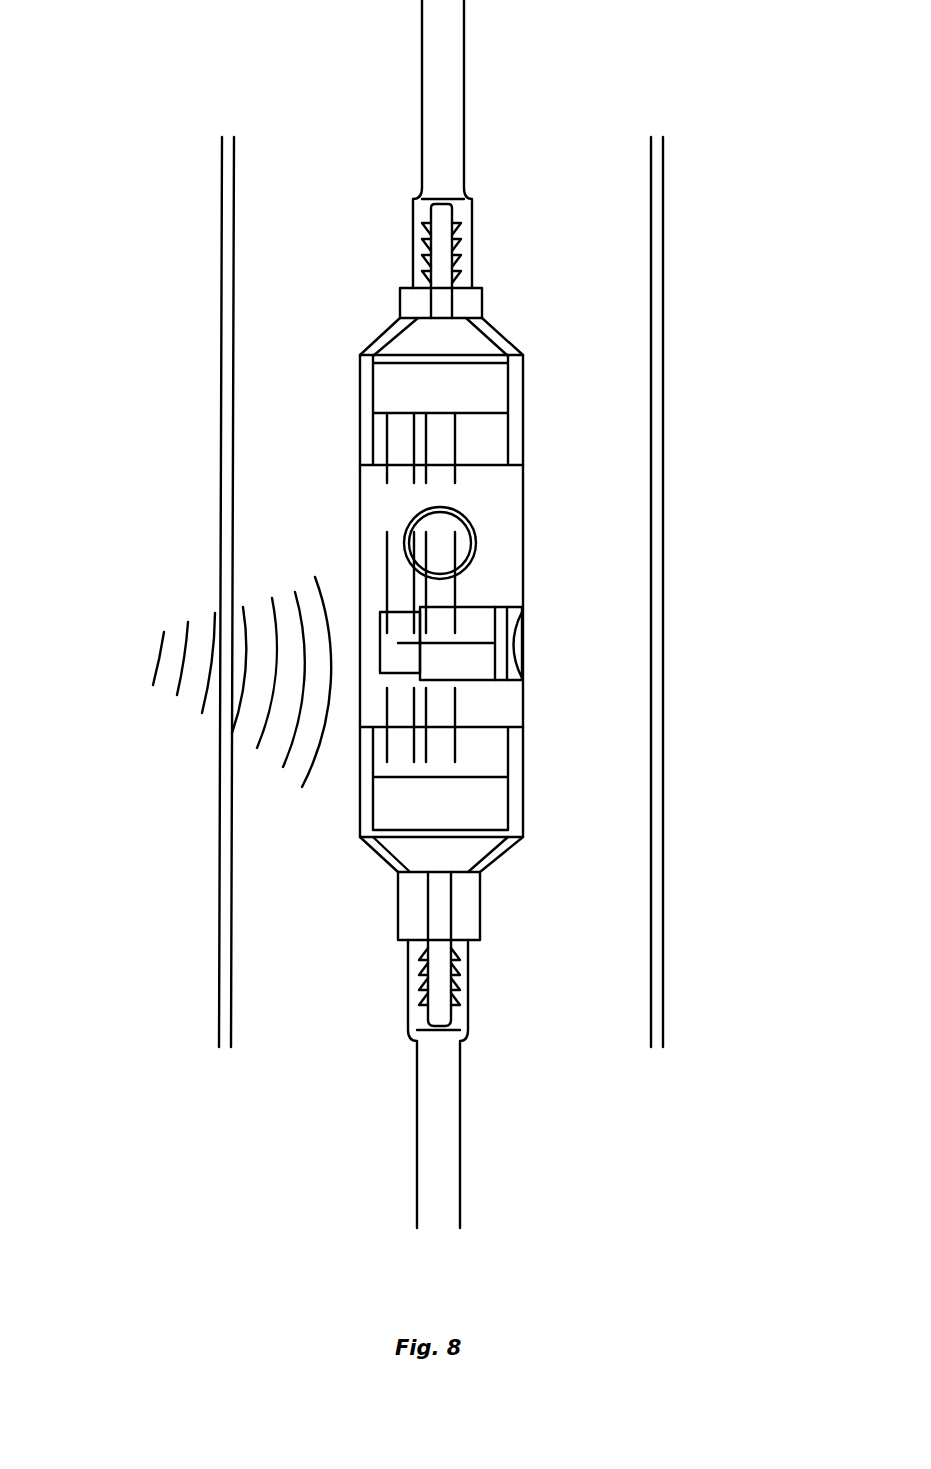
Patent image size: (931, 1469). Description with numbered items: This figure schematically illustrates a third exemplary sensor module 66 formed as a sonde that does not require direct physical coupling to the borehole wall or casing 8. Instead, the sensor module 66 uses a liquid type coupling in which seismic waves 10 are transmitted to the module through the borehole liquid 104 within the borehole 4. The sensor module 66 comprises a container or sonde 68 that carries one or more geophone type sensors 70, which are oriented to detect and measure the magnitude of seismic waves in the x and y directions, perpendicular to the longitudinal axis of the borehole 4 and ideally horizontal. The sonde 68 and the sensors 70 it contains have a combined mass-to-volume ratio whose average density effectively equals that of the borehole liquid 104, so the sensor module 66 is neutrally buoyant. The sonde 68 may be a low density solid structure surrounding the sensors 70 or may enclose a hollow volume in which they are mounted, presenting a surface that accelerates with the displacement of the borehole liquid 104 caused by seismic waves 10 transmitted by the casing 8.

The borehole 4 is at (578, 946).
The casing 8 is at (658, 645).
The seismic waves 10 is at (187, 697).
The sensor module 66 is at (437, 614).
The sonde 68 is at (553, 595).
The geophone type sensors 70 is at (478, 545).
The borehole liquid 104 is at (615, 850).